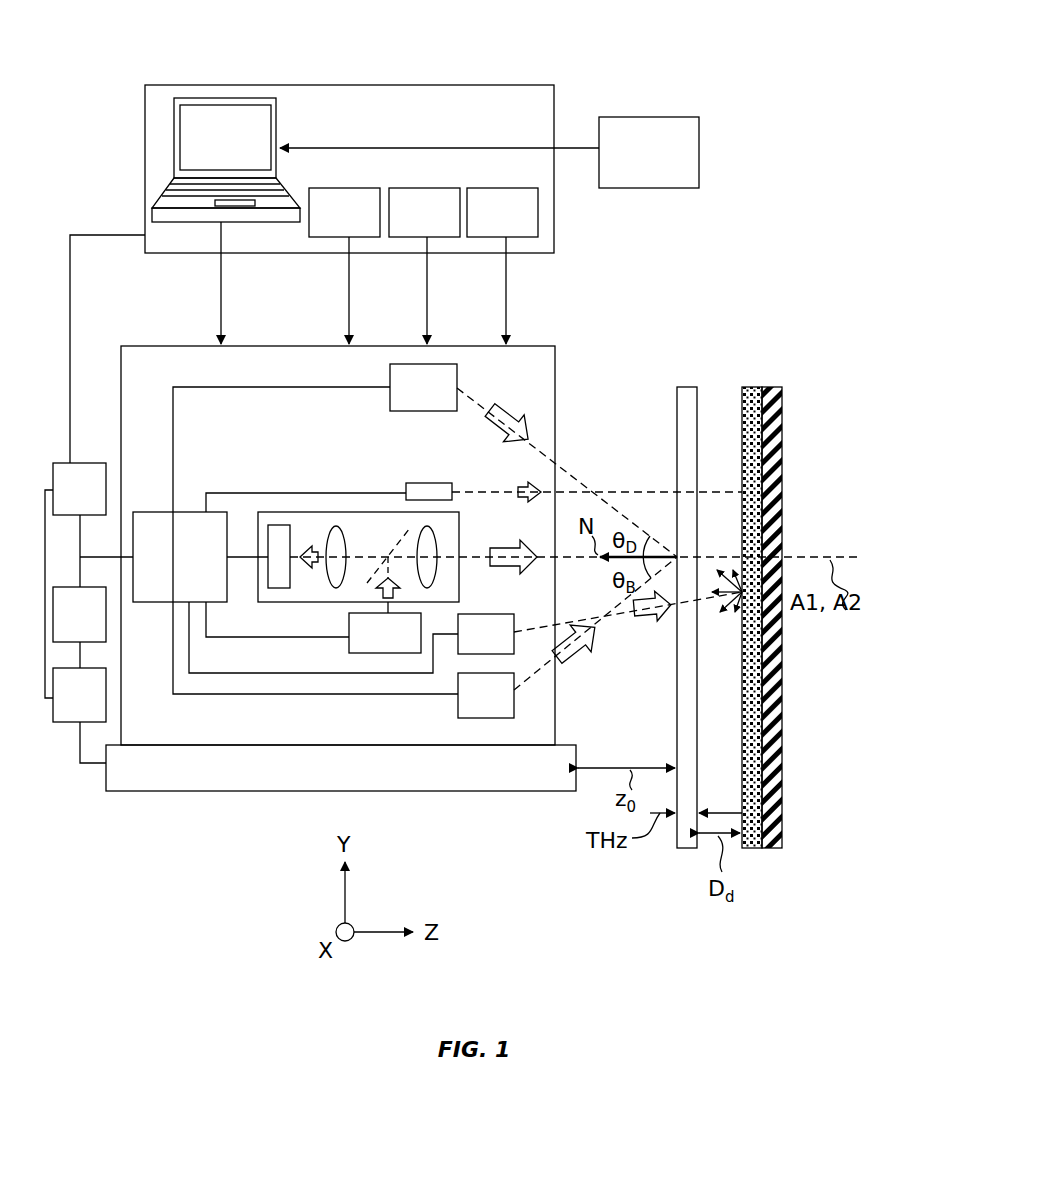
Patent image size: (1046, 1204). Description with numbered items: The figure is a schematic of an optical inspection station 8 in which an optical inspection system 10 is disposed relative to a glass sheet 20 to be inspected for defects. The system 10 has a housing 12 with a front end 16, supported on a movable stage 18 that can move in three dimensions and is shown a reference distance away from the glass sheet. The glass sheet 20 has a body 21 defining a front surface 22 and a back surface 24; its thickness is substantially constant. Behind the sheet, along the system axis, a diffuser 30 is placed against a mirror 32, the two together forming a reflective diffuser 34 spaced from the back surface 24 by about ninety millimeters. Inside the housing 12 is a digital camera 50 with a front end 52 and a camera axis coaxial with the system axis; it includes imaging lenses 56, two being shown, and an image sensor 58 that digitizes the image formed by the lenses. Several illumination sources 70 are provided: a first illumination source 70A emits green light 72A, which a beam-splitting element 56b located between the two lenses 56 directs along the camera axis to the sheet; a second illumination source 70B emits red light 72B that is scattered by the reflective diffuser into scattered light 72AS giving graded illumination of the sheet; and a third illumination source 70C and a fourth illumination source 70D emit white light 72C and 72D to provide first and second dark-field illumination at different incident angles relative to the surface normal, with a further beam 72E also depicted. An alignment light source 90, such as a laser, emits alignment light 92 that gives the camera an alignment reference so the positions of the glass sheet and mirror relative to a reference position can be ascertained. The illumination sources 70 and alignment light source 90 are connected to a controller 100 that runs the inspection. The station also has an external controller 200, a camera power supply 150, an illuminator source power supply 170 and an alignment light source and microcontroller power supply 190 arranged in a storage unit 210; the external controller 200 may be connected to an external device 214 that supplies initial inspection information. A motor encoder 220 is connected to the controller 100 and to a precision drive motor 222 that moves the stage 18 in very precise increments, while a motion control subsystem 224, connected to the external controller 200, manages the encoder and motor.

The optical inspection station 8 is at (677, 54).
The optical inspection system 10 is at (190, 343).
The housing 12 is at (276, 346).
The front end 16 is at (557, 352).
The movable stage 18 is at (322, 779).
The glass sheet 20 is at (650, 375).
The body 21 is at (688, 395).
The front surface 22 is at (677, 412).
The back surface 24 is at (698, 447).
The diffuser 30 is at (745, 387).
The mirror 32 is at (770, 387).
The reflective diffuser 34 is at (757, 327).
The digital camera 50 is at (300, 511).
The front end 52 is at (459, 536).
The imaging lenses 56 is at (337, 526).
The beam-splitting element 56b is at (393, 540).
The image sensor 58 is at (280, 588).
The illumination sources 70 is at (492, 726).
The first illumination source 70A is at (362, 645).
The second illumination source 70B is at (464, 646).
The third illumination source 70C is at (464, 707).
The fourth illumination source 70D is at (400, 400).
The light of first wavelength 72A is at (530, 572).
The scattered light 72AS is at (723, 553).
The light of second wavelength 72B is at (650, 620).
The light of third wavelength band 72C is at (575, 658).
The light of fourth wavelength band 72D is at (510, 416).
The beam E 72E is at (589, 432).
The alignment light source 90 is at (426, 483).
The alignment light 92 is at (527, 487).
The controller 100 is at (160, 569).
The camera power supply 150 is at (324, 224).
The illuminator source power supply 170 is at (404, 224).
The alignment light source and microcontroller power supply 190 is at (482, 224).
The external controller 200 is at (206, 154).
The storage unit 210 is at (430, 85).
The external device 214 is at (489, 152).
The motor encoder 220 is at (60, 626).
The precision drive motor 222 is at (60, 707).
The motion control subsystem 224 is at (60, 501).